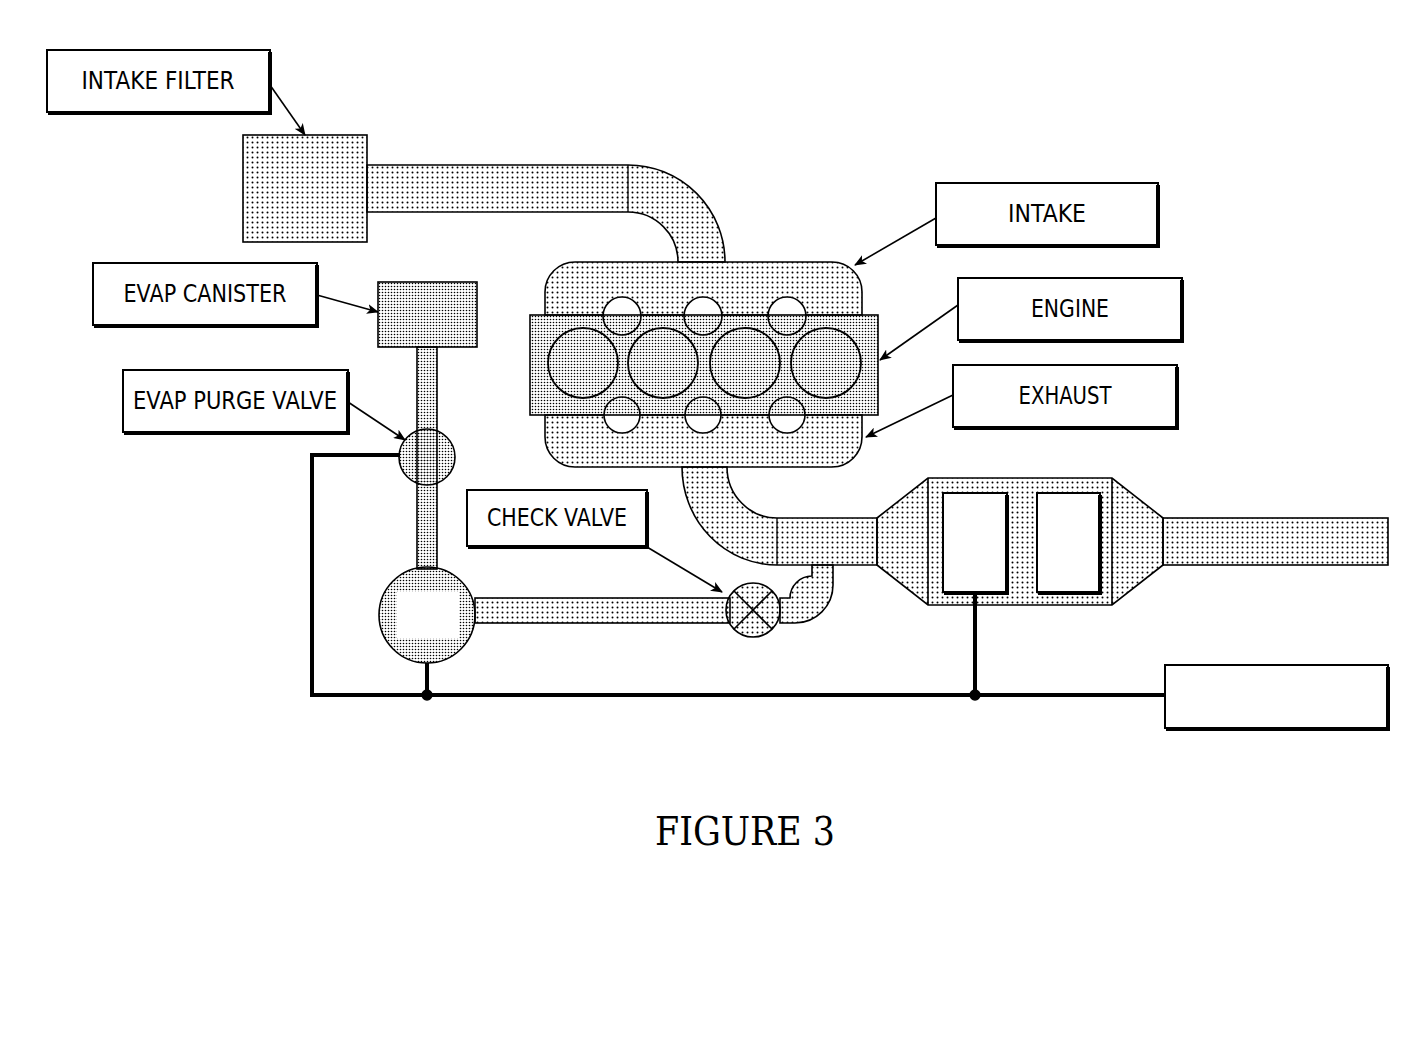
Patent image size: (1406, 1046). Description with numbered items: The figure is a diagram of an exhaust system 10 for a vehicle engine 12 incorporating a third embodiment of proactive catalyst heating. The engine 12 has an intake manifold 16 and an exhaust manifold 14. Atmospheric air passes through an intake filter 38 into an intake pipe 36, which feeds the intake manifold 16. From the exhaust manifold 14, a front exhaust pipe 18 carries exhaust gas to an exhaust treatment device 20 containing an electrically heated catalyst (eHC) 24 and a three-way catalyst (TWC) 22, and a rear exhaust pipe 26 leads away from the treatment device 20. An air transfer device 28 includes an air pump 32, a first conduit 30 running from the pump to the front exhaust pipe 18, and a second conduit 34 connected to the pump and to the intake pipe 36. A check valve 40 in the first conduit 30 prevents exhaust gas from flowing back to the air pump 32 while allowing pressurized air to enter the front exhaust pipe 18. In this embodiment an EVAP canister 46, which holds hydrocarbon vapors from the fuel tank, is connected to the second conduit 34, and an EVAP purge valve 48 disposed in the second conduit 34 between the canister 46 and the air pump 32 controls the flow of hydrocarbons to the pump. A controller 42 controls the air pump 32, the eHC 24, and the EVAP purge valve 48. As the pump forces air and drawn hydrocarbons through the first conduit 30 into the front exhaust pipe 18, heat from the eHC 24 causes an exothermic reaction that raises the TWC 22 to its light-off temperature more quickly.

The exhaust system 10 is at (1245, 149).
The engine 12 is at (514, 376).
The exhaust manifold 14 is at (655, 467).
The intake manifold 16 is at (770, 262).
The front exhaust pipe 18 is at (748, 512).
The exhaust treatment device 20 is at (1195, 462).
The three-way catalyst (TWC) 22 is at (1072, 593).
The electrically heated catalyst (eHC) 24 is at (992, 593).
The rear exhaust pipe 26 is at (1275, 565).
The air transfer device 28 is at (427, 716).
The first conduit 30 is at (600, 623).
The air pump 32 is at (380, 612).
The second conduit 34 is at (417, 526).
The intake pipe 36 is at (495, 212).
The intake filter 38 is at (243, 190).
The check valve 40 is at (752, 638).
The controller 42 is at (1278, 729).
The evaporative (EVAP) canister 46 is at (427, 282).
The EVAP purge valve 48 is at (452, 442).